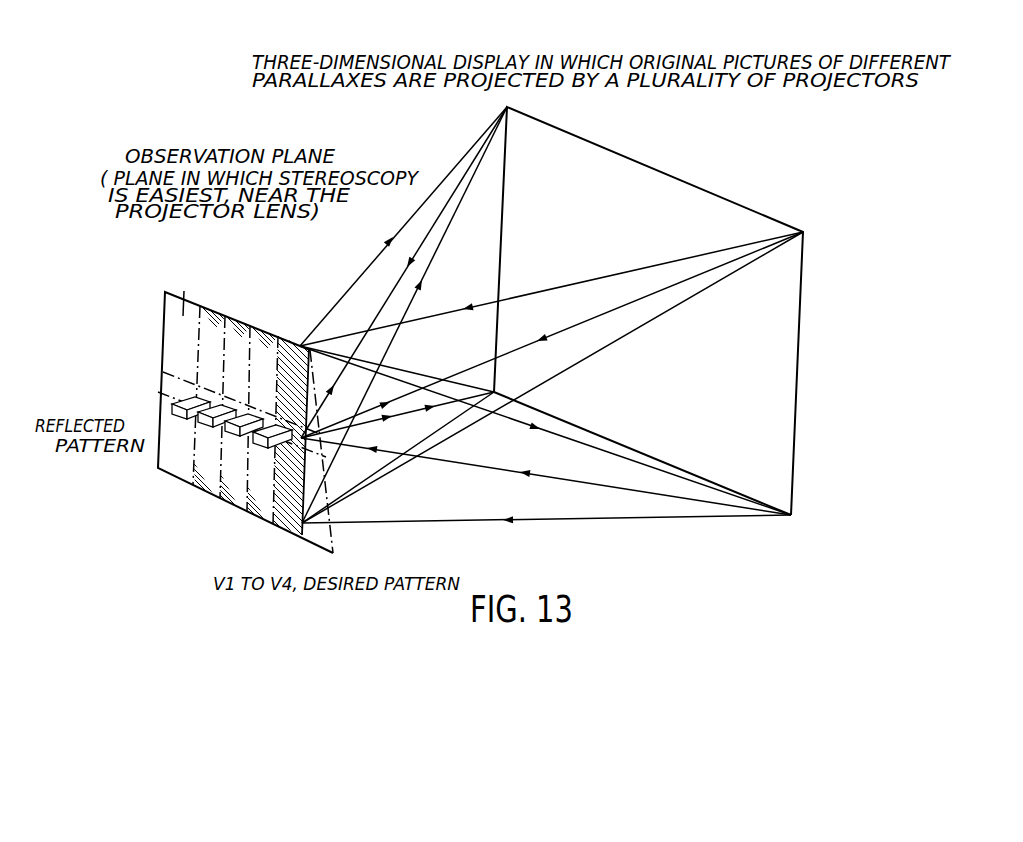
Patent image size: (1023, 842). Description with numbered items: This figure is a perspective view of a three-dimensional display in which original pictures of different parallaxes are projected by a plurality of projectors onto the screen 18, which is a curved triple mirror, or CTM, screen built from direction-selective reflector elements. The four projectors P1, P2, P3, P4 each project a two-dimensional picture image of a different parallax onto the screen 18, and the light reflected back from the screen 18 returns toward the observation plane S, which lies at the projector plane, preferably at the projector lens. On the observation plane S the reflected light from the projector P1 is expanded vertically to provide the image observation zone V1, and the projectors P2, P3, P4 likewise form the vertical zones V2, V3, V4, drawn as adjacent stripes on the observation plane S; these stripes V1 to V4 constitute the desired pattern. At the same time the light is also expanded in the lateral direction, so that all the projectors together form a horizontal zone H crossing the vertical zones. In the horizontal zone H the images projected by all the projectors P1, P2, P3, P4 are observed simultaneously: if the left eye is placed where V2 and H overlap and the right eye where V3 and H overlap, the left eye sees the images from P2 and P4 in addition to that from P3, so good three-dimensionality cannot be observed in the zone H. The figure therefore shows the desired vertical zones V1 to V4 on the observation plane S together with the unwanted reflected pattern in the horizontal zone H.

The screen 18 is at (797, 344).
The curved triple mirror CTM is at (795, 492).
The observation plane S is at (188, 294).
The image observation zone V1 is at (213, 313).
The vertical zone V2 is at (242, 322).
The vertical zone V3 is at (268, 335).
The vertical zone V4 is at (294, 343).
The horizontal zone H is at (168, 385).
The projector P1 is at (177, 418).
The projector P2 is at (207, 428).
The projector P3 is at (233, 440).
The projector P4 is at (260, 452).